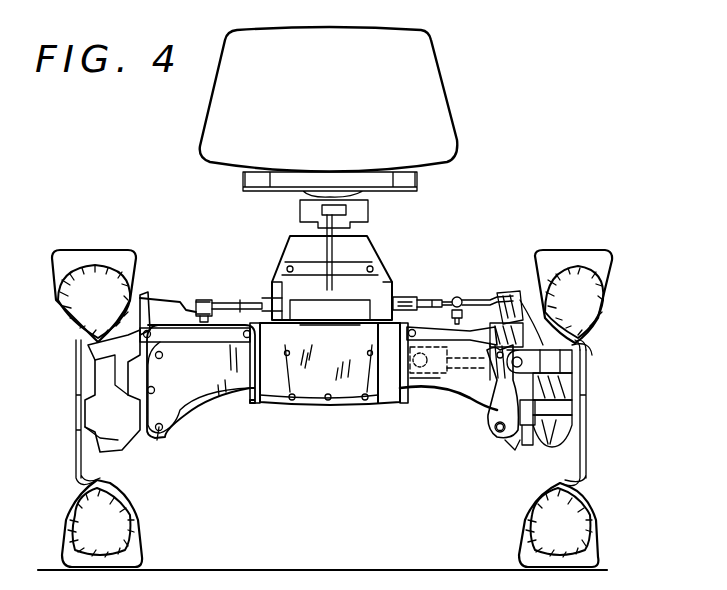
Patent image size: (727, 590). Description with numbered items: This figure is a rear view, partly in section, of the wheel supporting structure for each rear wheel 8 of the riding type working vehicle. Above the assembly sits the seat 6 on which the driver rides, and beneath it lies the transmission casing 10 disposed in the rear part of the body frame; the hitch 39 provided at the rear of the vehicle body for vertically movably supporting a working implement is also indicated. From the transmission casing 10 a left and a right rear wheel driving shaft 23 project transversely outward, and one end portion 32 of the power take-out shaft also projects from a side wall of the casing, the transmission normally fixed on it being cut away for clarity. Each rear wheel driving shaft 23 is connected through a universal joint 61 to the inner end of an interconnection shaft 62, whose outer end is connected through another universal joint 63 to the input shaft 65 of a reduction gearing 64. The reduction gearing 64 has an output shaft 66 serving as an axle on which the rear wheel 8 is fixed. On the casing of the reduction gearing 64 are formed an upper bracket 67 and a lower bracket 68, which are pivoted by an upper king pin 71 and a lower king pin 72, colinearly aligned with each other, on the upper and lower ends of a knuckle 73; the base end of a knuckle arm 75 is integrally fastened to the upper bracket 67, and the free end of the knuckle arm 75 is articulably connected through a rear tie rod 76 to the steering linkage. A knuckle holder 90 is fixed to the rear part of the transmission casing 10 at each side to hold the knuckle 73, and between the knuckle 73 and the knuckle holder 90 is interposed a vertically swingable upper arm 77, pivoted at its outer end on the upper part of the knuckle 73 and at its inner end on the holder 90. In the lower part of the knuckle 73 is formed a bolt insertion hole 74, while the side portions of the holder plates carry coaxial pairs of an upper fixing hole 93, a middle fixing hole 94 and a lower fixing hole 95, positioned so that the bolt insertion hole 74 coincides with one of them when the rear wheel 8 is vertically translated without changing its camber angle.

The seat 6 is at (261, 38).
The rear wheel 8 is at (52, 268).
The transmission casing 10 is at (325, 408).
The rear wheel driving shaft 23 is at (405, 380).
The end portion of the power take-out shaft 32 is at (405, 295).
The hitch 39 is at (333, 320).
The universal joint 61 is at (420, 376).
The interconnection shaft 62 is at (455, 395).
The universal joint 63 is at (590, 350).
The reduction gearing 64 is at (103, 410).
The input shaft 65 is at (575, 367).
The output shaft 66 is at (583, 412).
The upper bracket 67 is at (145, 305).
The lower bracket 68 is at (527, 427).
The upper king pin 71 is at (505, 292).
The lower king pin 72 is at (515, 450).
The knuckle 73 is at (133, 380).
The bolt insertion hole 74 is at (477, 382).
The knuckle arm 75 is at (190, 302).
The rear tie rod 76 is at (253, 300).
The upper arm 77 is at (203, 303).
The knuckle holder 90 is at (202, 414).
The upper fixing hole 93 is at (164, 355).
The middle fixing hole 94 is at (156, 389).
The lower fixing hole 95 is at (158, 432).